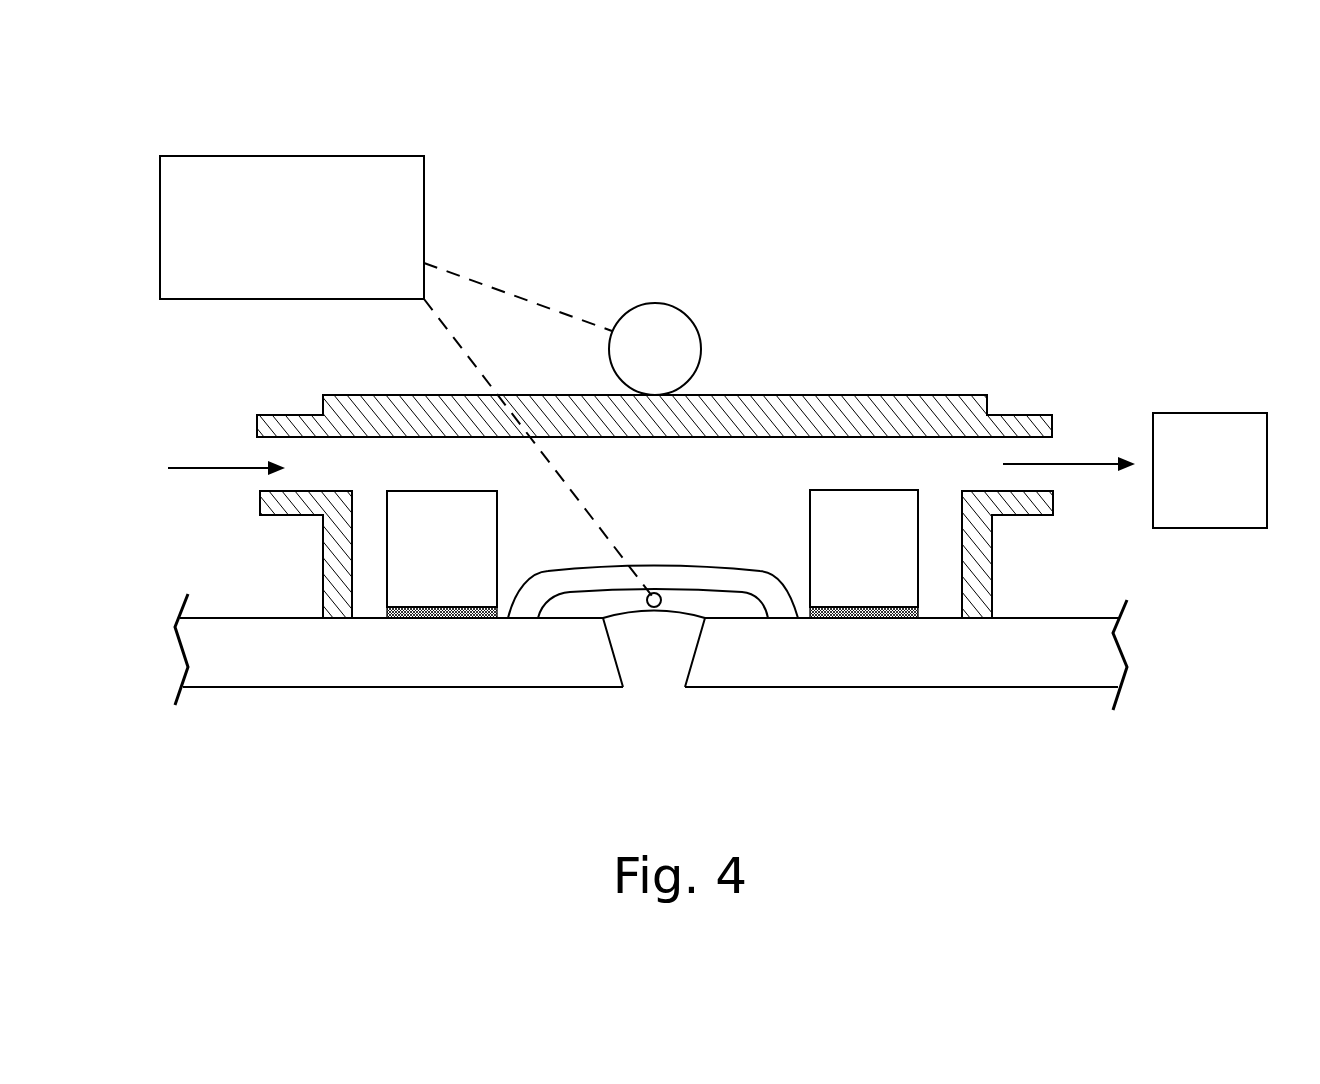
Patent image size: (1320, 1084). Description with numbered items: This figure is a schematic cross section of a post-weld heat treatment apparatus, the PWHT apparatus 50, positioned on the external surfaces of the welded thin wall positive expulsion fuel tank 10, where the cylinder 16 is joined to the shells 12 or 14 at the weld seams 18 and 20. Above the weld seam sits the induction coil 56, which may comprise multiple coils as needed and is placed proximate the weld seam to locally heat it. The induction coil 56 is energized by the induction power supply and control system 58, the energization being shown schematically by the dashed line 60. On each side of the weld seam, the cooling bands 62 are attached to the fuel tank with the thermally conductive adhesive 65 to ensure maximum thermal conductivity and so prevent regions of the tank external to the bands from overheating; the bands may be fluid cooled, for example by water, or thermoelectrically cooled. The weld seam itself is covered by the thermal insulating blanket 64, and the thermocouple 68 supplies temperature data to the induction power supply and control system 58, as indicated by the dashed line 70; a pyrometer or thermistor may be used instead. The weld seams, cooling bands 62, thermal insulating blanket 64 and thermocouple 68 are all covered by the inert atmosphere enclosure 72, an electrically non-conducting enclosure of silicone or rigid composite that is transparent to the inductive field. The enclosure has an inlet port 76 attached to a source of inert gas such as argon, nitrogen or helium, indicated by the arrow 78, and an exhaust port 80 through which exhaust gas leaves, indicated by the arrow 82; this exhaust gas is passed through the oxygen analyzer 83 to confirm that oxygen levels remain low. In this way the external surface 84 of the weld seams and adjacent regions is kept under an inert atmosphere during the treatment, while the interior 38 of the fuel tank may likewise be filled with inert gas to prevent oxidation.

The positive expulsion fuel tank 10 is at (1160, 657).
The shell 12 is at (1037, 618).
The shell 14 is at (938, 667).
The cylinder 16 is at (257, 653).
The weld seam 18 is at (618, 693).
The weld seam 20 is at (654, 658).
The interior 38 is at (716, 781).
The PWHT apparatus 50 is at (910, 250).
The induction coil 56 is at (670, 330).
The induction power supply and control system 58 is at (272, 216).
The dashed line 60 is at (485, 283).
The cooling band 62 is at (440, 510).
The thermal insulating blanket 64 is at (580, 585).
The thermally conductive adhesive 65 is at (443, 613).
The thermocouple 68 is at (657, 594).
The dashed line 70 is at (460, 345).
The inert atmosphere enclosure 72 is at (895, 388).
The inlet port 76 is at (296, 403).
The arrow 78 is at (217, 462).
The exhaust port 80 is at (1028, 403).
The arrow 82 is at (1075, 462).
The oxygen analyzer 83 is at (1195, 470).
The external surface 84 is at (697, 593).